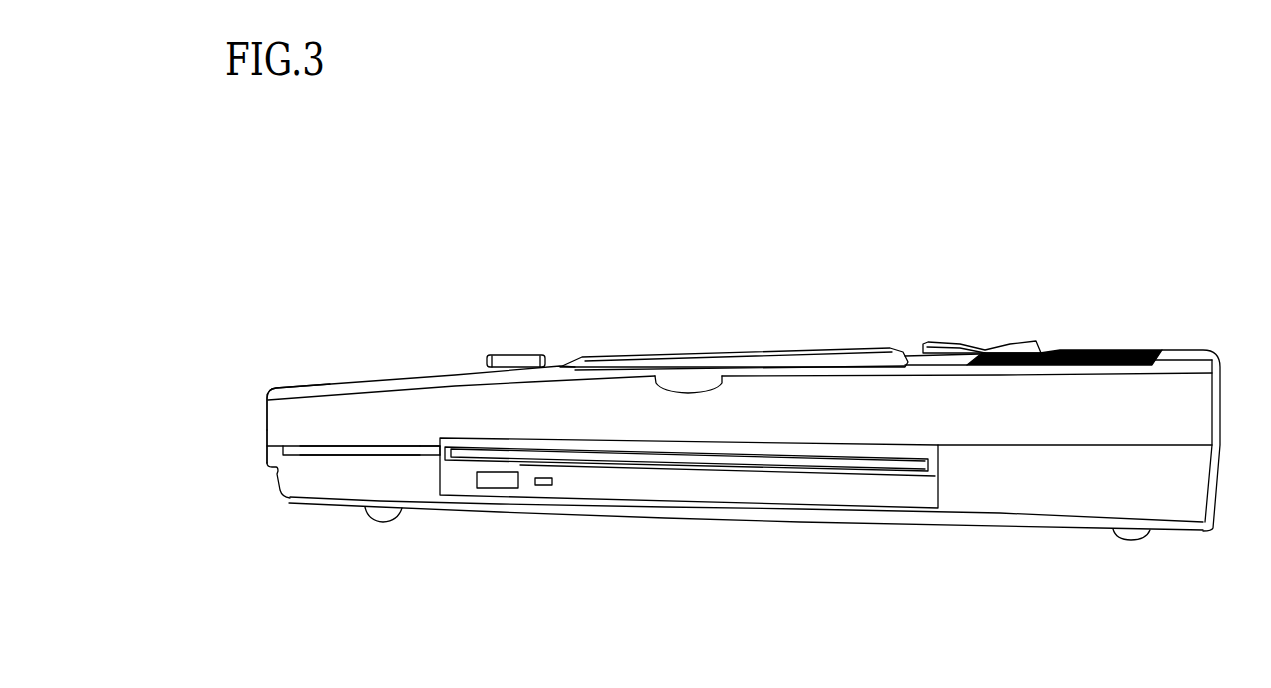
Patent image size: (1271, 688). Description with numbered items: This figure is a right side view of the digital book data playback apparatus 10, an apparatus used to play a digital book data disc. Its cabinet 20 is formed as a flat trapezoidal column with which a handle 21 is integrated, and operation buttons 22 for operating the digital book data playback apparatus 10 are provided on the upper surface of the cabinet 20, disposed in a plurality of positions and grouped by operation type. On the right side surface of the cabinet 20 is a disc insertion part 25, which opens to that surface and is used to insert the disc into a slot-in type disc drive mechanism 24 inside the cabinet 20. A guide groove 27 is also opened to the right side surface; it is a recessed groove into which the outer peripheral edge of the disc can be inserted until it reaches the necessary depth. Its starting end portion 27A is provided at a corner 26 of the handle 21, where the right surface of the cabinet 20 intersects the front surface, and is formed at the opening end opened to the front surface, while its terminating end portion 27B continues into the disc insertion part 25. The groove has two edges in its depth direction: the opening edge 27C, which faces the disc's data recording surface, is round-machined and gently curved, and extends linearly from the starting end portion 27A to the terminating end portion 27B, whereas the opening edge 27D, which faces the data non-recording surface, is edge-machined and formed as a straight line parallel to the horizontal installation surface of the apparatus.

The digital book data playback apparatus 10 is at (1057, 272).
The cabinet 20 is at (1157, 400).
The handle 21 is at (293, 385).
The operation buttons 22 is at (513, 355).
The slot-in type disc drive mechanism 24 is at (655, 482).
The disc insertion part 25 is at (470, 452).
The corner 26 is at (273, 427).
The guide groove 27 is at (313, 448).
The starting end portion 27A is at (292, 452).
The terminating end portion 27B is at (433, 446).
The opening edge 27C is at (368, 455).
The opening edge 27D is at (371, 444).